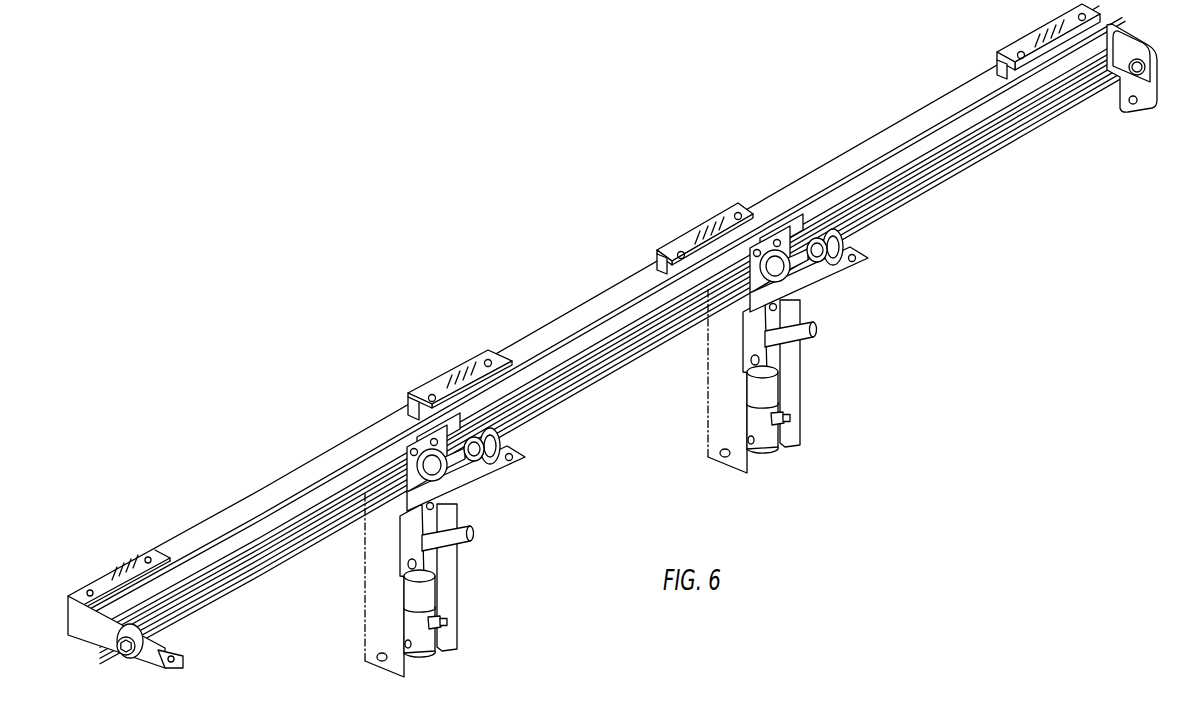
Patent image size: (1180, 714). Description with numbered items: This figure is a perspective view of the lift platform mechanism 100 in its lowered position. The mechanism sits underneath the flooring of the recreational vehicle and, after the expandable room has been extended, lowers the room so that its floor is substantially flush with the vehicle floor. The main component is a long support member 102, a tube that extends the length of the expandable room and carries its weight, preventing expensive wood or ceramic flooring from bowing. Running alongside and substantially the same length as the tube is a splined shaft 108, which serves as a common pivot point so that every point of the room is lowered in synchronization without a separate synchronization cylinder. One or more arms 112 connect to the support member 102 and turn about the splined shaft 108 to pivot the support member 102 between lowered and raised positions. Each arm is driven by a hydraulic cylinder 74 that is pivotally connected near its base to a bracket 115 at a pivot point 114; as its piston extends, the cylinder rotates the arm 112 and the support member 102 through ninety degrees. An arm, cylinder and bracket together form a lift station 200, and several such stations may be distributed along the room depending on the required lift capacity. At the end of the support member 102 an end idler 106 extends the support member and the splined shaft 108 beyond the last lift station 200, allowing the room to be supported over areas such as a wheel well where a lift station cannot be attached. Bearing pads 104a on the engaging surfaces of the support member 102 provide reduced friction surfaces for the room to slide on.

The lift platform mechanism 100 is at (603, 348).
The support member 102 is at (320, 455).
The bearing pad 104a is at (463, 366).
The end idler 106 is at (94, 632).
The splined shaft 108 is at (277, 572).
The arm 112 is at (460, 552).
The pivot point 114 is at (718, 456).
The bracket 115 is at (700, 383).
The lift station 200 is at (776, 345).
The hydraulic cylinder 74 is at (426, 655).